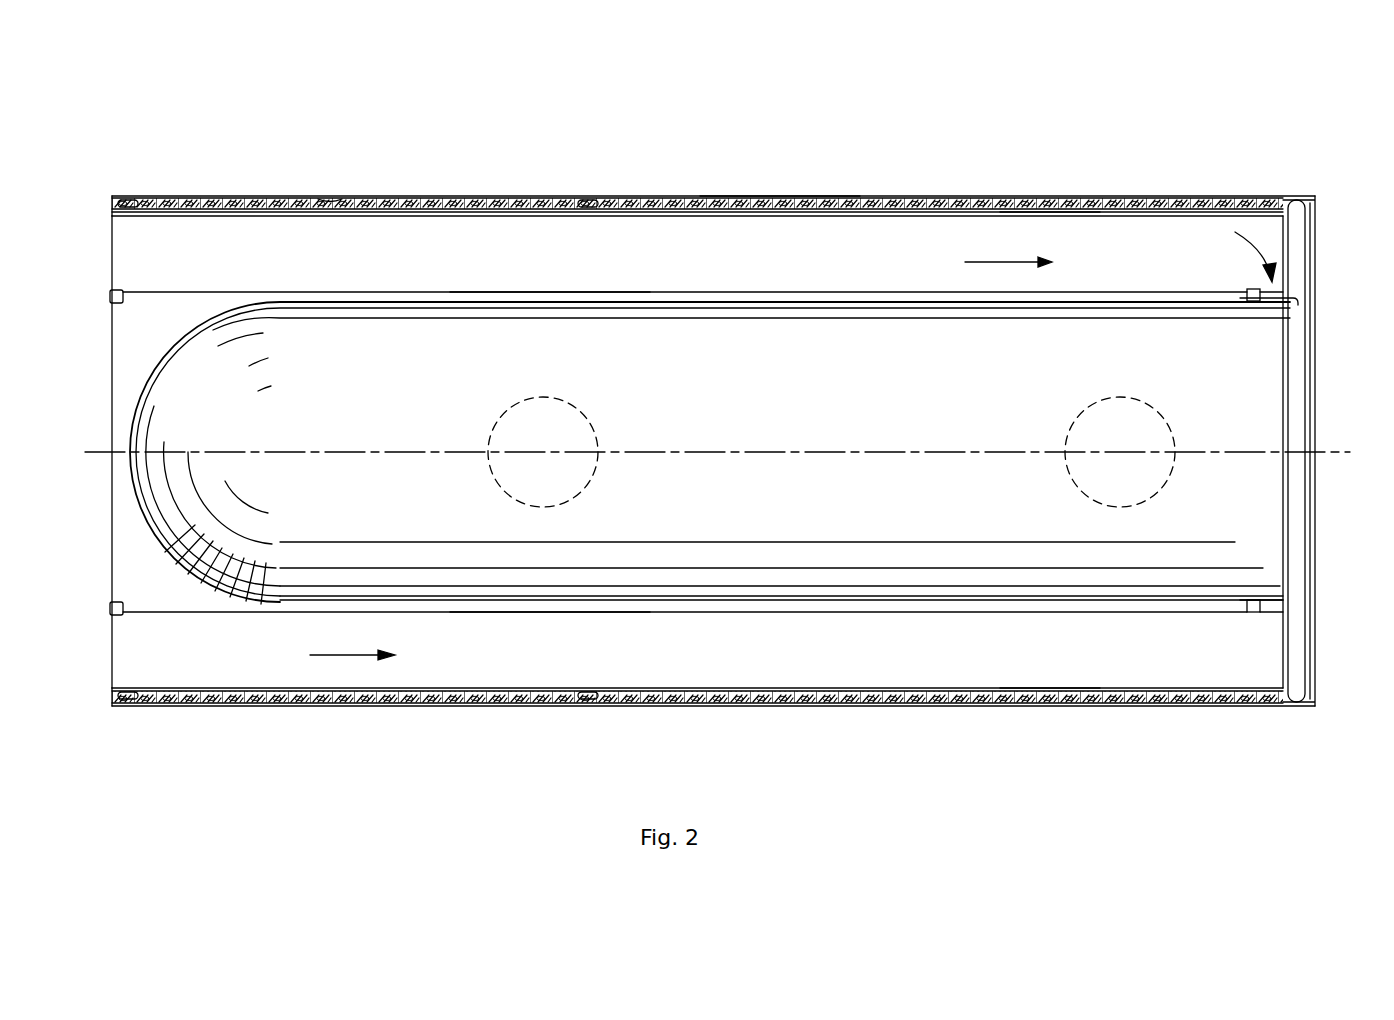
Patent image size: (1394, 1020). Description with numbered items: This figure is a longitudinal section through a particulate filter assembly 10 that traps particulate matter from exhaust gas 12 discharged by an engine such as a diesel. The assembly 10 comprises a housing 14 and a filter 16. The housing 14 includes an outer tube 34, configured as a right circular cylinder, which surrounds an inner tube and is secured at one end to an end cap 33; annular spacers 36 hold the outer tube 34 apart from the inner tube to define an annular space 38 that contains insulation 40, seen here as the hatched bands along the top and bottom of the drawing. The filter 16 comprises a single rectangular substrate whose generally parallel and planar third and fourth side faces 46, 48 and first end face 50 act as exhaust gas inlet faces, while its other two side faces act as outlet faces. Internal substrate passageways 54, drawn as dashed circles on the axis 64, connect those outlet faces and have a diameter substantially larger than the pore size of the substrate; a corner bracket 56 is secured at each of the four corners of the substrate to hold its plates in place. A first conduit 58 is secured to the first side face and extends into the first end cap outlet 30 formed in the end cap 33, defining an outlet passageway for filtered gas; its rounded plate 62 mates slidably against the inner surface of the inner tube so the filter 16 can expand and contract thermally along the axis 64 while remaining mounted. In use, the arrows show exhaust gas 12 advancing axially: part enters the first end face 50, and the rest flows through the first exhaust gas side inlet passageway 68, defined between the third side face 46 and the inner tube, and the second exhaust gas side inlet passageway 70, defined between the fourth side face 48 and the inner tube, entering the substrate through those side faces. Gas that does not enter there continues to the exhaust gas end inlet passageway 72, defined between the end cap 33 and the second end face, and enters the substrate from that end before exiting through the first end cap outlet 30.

The particulate filter assembly 10 is at (255, 108).
The exhaust gas 12 is at (775, 278).
The housing 14 is at (300, 722).
The filter 16 is at (168, 282).
The first end cap outlet 30 is at (1298, 302).
The end cap 33 is at (1290, 258).
The outer tube 34 is at (890, 197).
The annular spacers 36 is at (126, 197).
The annular space 38 is at (330, 197).
The insulation 40 is at (770, 197).
The third side face 46 is at (540, 291).
The fourth side face 48 is at (565, 613).
The first end face 50 is at (112, 442).
The substrate passageways 54 is at (495, 430).
The corner bracket 56 is at (124, 304).
The first conduit 58 is at (232, 355).
The rounded plates 62 is at (348, 325).
The axis 64 is at (745, 450).
The first exhaust gas side inlet passageway 68 is at (1040, 216).
The second exhaust gas side inlet passageway 70 is at (1062, 703).
The exhaust gas end inlet passageway 72 is at (1285, 602).